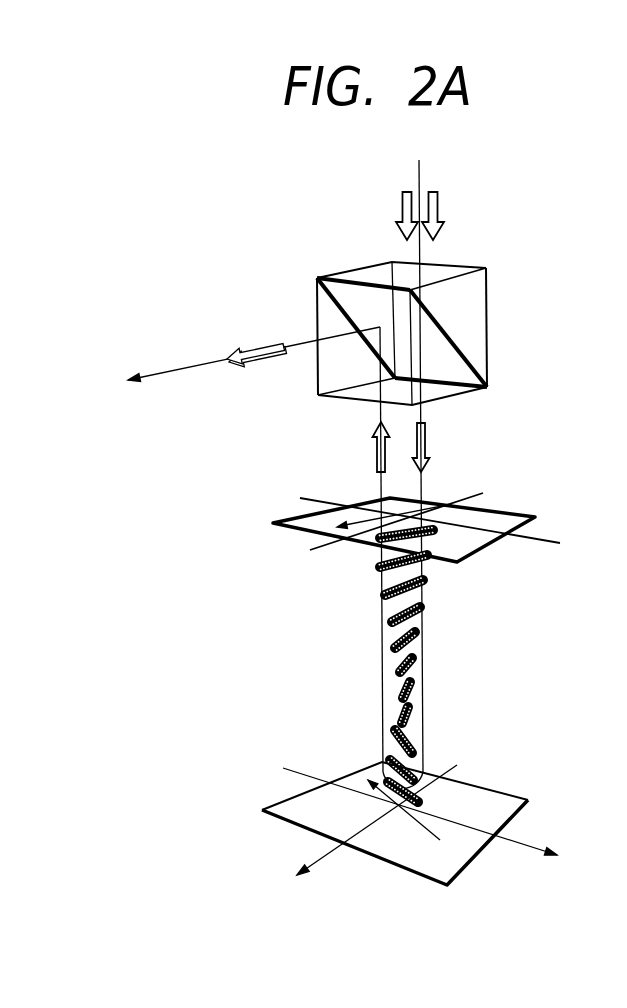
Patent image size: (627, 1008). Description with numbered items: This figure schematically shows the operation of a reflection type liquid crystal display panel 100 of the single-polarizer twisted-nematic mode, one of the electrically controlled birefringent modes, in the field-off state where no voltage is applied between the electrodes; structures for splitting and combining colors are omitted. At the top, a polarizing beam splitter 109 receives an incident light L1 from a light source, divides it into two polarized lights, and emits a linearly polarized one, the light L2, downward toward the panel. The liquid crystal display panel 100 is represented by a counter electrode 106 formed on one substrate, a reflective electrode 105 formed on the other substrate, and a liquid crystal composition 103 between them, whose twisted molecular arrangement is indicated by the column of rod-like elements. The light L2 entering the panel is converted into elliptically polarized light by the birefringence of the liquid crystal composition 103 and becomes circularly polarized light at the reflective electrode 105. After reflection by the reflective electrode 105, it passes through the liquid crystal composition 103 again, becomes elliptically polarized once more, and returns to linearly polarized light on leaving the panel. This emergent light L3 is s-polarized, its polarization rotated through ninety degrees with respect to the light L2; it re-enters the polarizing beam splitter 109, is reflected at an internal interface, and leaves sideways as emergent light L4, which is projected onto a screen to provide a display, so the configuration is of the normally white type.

The liquid crystal display panel 100 is at (409, 692).
The liquid crystal composition 103 is at (417, 695).
The reflective electrode 105 is at (493, 793).
The counter electrode 106 is at (312, 527).
The polarizing beam splitter 109 is at (472, 317).
The incident light L1 is at (440, 210).
The linearly polarized light L2 is at (427, 435).
The emergent linearly polarized light L3 is at (378, 450).
The emergent light L4 is at (257, 345).